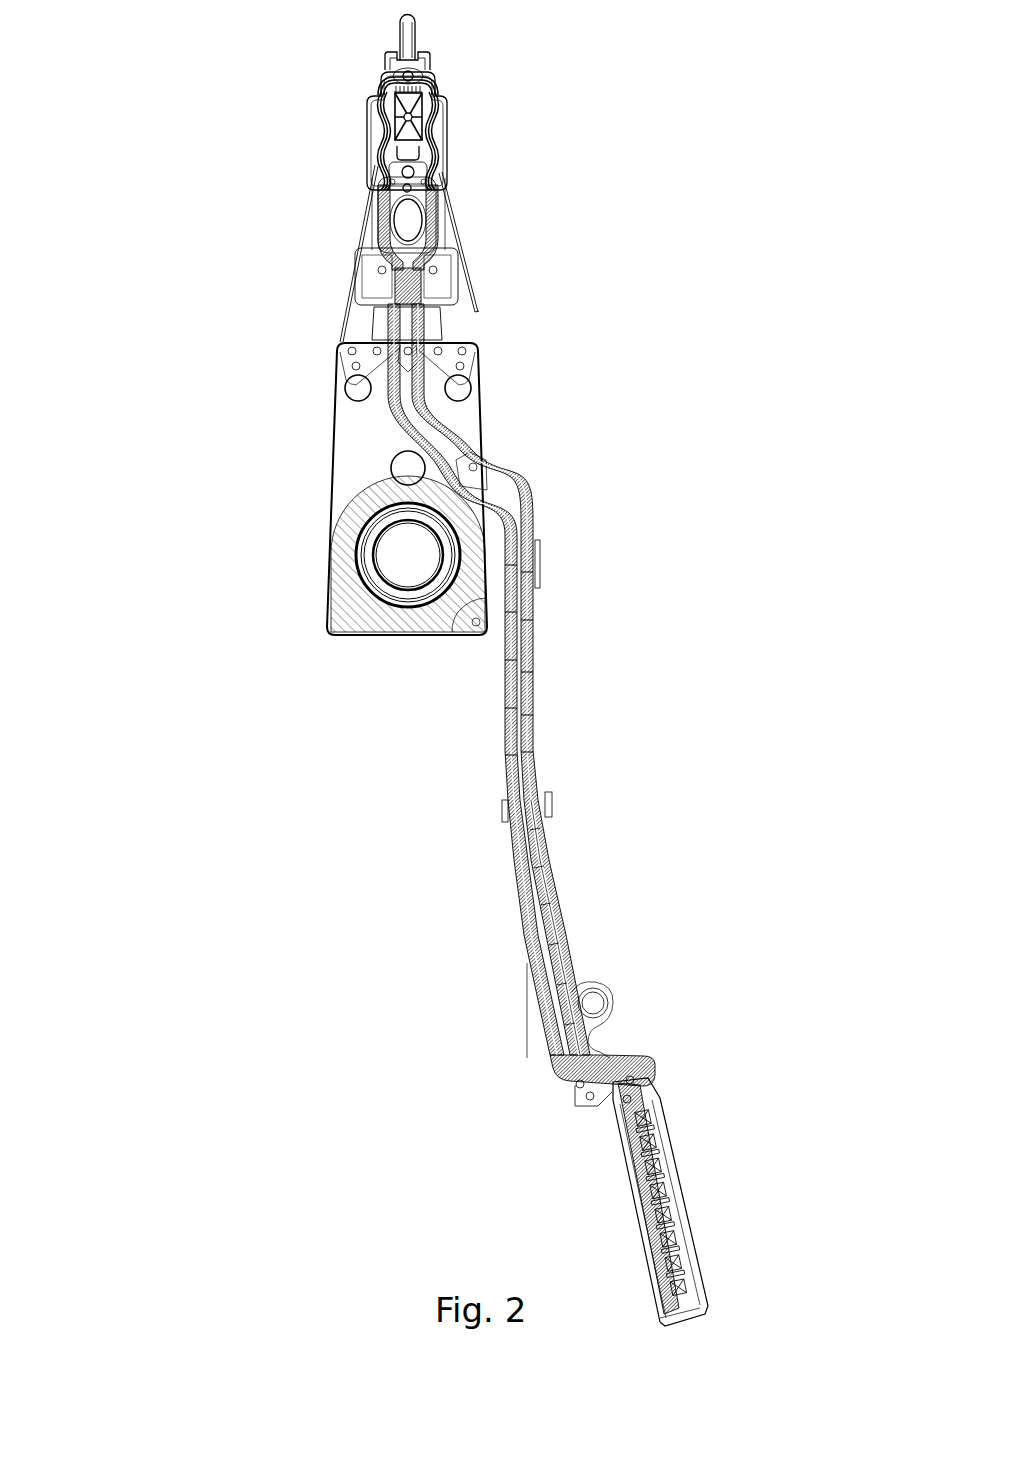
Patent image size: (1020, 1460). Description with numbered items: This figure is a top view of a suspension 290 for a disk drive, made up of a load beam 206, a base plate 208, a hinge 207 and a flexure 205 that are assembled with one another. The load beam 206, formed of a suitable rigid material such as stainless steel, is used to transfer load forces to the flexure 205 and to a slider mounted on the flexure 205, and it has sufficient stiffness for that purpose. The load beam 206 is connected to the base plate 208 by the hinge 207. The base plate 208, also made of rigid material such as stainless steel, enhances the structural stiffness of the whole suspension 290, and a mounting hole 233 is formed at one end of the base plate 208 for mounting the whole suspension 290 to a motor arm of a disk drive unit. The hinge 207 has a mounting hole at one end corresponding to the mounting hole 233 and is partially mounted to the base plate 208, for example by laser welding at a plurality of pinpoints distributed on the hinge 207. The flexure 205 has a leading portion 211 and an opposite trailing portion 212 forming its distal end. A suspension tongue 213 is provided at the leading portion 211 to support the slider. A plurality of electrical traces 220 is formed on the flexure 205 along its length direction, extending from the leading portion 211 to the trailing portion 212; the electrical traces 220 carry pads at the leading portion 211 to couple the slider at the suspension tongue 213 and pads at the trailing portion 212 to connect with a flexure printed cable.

The suspension 290 is at (136, 55).
The flexure 205 is at (370, 162).
The load beam 206 is at (363, 223).
The hinge 207 is at (353, 320).
The base plate 208 is at (348, 443).
The leading portion 211 is at (497, 167).
The trailing portion 212 is at (542, 1232).
The suspension tongue 213 is at (418, 108).
The electrical traces 220 is at (433, 222).
The mounting hole 233 is at (407, 555).